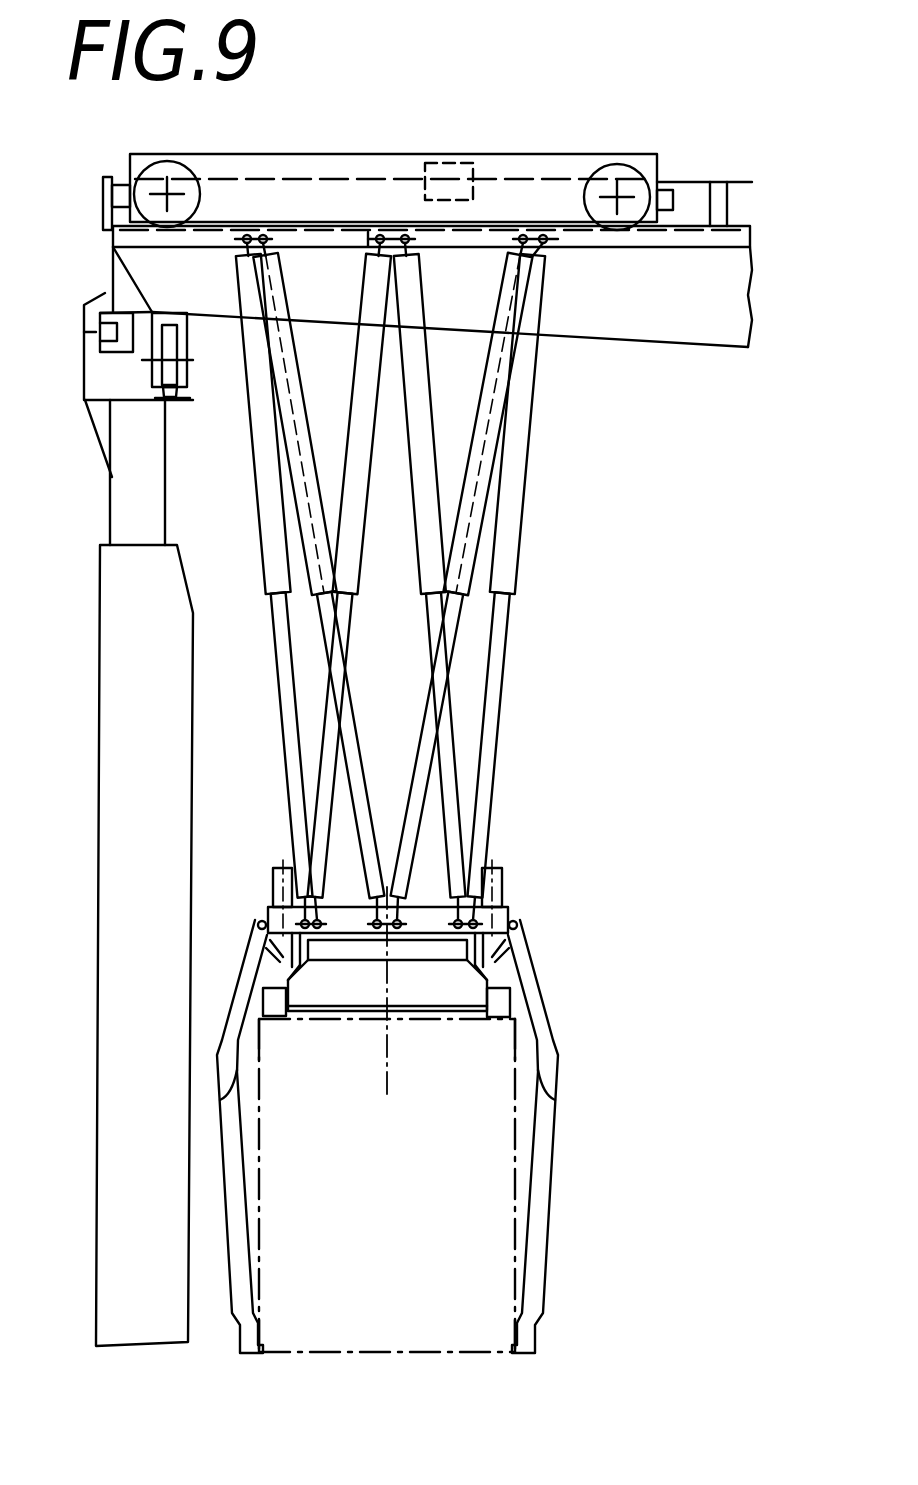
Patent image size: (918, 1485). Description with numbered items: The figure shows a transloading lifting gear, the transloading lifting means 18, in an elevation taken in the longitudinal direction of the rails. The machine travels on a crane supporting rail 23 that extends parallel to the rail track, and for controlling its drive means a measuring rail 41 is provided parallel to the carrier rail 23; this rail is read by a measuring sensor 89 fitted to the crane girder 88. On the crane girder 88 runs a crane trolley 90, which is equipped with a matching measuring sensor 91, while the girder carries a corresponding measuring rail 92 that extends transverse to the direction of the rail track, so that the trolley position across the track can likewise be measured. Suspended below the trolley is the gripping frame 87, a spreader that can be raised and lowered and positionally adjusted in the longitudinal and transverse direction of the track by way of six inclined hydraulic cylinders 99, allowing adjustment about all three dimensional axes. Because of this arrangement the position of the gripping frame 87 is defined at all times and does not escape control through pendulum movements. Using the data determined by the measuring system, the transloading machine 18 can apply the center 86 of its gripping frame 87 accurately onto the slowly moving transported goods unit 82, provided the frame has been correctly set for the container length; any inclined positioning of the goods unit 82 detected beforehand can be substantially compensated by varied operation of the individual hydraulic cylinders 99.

The transloading lifting means 18 is at (600, 731).
The crane supporting rail 23 is at (167, 398).
The measuring rail 41 is at (56, 350).
The transported goods unit 82 is at (517, 1147).
The center of gripping frame 86 is at (385, 1065).
The gripping frame 87 is at (556, 918).
The crane girder 88 is at (667, 330).
The measuring sensor 89 is at (118, 352).
The crane trolley 90 is at (551, 154).
The measuring sensor 91 is at (444, 160).
The measuring rail 92 is at (690, 182).
The inclined hydraulic cylinders 99 is at (507, 532).